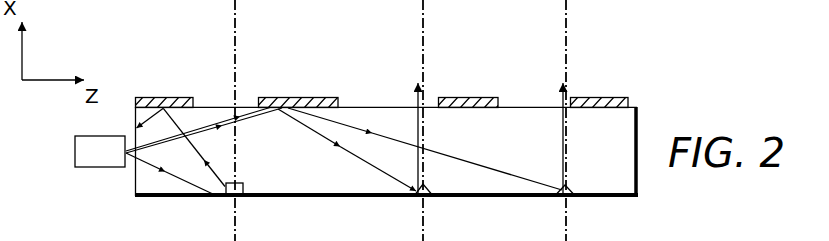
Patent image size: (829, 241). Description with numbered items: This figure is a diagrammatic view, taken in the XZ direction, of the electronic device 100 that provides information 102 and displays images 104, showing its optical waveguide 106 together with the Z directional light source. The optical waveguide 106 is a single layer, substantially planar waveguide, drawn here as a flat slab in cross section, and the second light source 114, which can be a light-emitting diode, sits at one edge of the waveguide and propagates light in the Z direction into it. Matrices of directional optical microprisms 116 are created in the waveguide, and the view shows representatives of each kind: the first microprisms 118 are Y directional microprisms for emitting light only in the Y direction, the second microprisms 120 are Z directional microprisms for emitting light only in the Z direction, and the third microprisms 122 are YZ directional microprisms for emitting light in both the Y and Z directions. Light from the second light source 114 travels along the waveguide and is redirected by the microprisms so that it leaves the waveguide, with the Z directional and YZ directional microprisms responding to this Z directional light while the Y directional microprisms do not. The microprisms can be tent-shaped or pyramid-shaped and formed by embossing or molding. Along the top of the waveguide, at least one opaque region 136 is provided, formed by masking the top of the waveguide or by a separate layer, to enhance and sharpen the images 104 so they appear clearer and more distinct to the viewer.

The electronic device 100 is at (637, 107).
The information 102 is at (206, 105).
The images 104 is at (537, 106).
The optical waveguide 106 is at (637, 197).
The second light source 114 is at (73, 150).
The directional optical microprisms 116 is at (399, 190).
The first microprisms 118 is at (243, 190).
The second microprisms 120 is at (430, 189).
The third microprisms 122 is at (572, 190).
The opaque region 136 is at (283, 97).